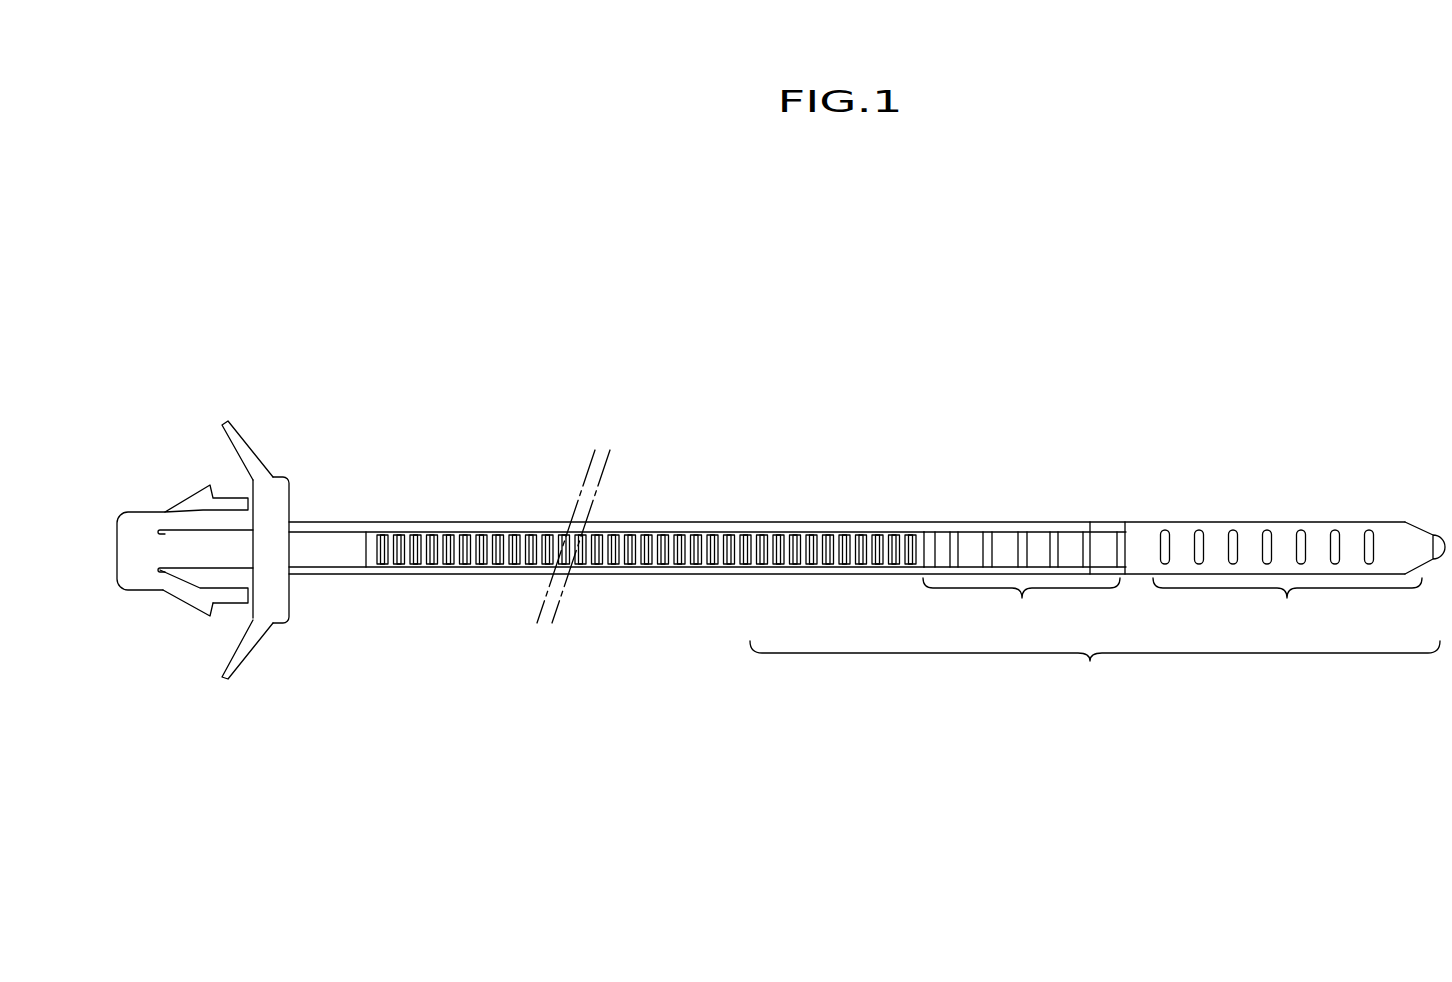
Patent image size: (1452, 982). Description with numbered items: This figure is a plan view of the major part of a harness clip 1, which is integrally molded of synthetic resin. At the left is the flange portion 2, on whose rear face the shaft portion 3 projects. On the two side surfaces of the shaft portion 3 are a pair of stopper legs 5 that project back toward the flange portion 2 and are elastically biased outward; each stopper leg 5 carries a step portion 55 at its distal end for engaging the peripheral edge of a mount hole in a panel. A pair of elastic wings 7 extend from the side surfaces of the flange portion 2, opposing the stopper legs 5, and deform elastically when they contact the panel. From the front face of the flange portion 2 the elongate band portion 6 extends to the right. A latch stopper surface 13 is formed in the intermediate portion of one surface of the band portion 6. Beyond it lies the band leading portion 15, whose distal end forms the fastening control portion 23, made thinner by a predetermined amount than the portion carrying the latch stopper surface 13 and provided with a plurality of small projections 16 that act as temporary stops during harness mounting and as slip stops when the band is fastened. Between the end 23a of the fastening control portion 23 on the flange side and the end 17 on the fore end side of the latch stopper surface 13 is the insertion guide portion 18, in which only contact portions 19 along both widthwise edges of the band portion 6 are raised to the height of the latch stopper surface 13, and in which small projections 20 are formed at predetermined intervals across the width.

The harness clip 1 is at (470, 464).
The flange portion 2 is at (288, 498).
The shaft portion 3 is at (206, 536).
The stopper leg 5 is at (163, 512).
The step portion 55 is at (210, 610).
The band portion 6 is at (985, 532).
The elastic wing 7 is at (246, 441).
The latch stopper surface 13 is at (830, 532).
The band leading portion 15 is at (1095, 666).
The small projection 16 is at (1233, 530).
The end on the fore end side 17 is at (922, 567).
The insertion guide portion 18 is at (1001, 542).
The contact portion 19 is at (952, 533).
The small projection 20 is at (1032, 532).
The fastening control portion 23 is at (1299, 543).
The end of the fastening control portion 23a is at (1138, 567).